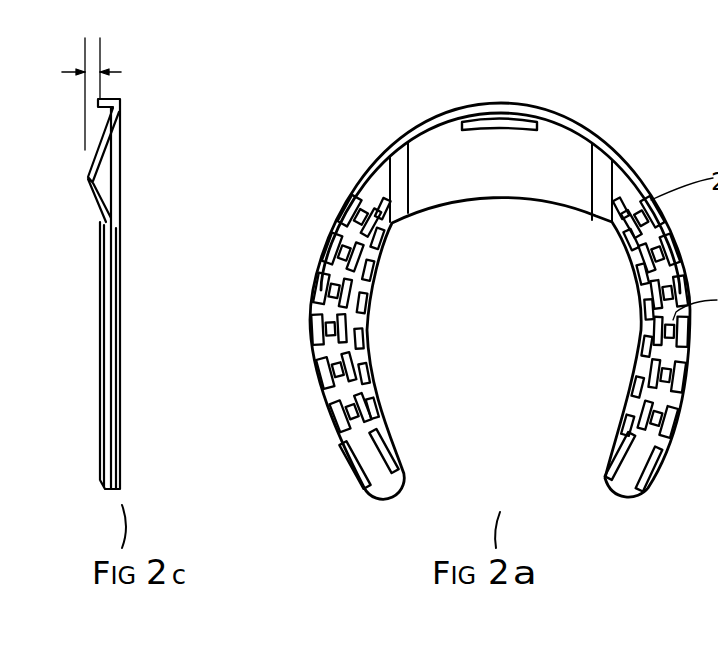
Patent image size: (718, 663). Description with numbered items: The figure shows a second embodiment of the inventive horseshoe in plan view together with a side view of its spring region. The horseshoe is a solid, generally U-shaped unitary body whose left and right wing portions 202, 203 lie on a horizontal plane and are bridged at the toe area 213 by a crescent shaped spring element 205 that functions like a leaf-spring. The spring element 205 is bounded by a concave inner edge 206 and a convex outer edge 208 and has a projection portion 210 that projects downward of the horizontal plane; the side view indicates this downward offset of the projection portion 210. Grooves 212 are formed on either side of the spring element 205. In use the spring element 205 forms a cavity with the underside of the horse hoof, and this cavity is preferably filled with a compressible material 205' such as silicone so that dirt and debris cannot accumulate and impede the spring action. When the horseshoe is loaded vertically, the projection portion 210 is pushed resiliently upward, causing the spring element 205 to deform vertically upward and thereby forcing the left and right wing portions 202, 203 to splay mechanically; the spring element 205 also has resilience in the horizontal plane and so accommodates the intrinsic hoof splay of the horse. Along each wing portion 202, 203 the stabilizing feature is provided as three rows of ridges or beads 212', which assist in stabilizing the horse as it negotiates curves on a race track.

In FIG. 2A, the left wing portion 202 is at (358, 477).
In FIG. 2A, the right wing portion 203 is at (641, 493).
In FIG. 2A, the crescent shaped spring element 205 is at (500, 292).
In FIG. 2C, the compressible material 205' is at (149, 294).
In FIG. 2C, the concave inner edge 206 is at (94, 178).
In FIG. 2A, the convex outer edge 208 is at (447, 128).
In FIG. 2C, the projection portion 210 is at (93, 62).
In FIG. 2A, the grooves 212 is at (499, 176).
In FIG. 2A, the rows of ridges or beads 212' is at (499, 316).
In FIG. 2A, the toe area 213 is at (506, 104).